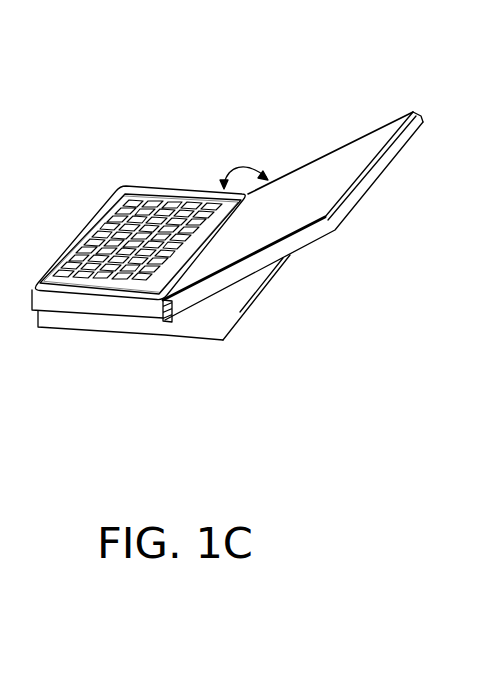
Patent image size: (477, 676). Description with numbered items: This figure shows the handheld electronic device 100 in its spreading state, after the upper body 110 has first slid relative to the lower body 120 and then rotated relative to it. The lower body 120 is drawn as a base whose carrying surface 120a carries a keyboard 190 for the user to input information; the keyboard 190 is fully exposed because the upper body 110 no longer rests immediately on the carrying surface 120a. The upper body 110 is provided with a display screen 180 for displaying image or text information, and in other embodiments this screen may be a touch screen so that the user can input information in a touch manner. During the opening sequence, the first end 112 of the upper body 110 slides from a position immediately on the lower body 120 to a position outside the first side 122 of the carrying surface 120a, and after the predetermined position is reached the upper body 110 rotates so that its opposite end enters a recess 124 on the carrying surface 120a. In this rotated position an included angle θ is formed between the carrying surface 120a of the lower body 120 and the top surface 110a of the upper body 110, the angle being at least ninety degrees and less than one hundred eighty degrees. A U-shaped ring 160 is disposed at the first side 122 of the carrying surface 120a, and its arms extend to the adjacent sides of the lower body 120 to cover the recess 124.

The handheld electronic device 100 is at (378, 447).
The upper body 110 is at (372, 170).
The top surface of the upper body 110a is at (280, 198).
The first end of the upper body 112 is at (423, 113).
The lower body 120 is at (73, 322).
The carrying surface 120a is at (153, 198).
The first side of the carrying surface 122 is at (262, 283).
The recess 124 is at (123, 290).
The U-shaped ring 160 is at (197, 313).
The display screen 180 is at (340, 160).
The keyboard 190 is at (90, 236).